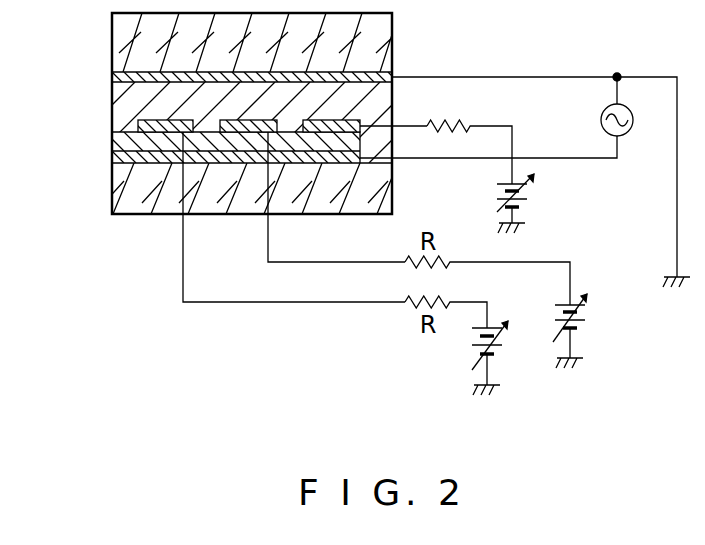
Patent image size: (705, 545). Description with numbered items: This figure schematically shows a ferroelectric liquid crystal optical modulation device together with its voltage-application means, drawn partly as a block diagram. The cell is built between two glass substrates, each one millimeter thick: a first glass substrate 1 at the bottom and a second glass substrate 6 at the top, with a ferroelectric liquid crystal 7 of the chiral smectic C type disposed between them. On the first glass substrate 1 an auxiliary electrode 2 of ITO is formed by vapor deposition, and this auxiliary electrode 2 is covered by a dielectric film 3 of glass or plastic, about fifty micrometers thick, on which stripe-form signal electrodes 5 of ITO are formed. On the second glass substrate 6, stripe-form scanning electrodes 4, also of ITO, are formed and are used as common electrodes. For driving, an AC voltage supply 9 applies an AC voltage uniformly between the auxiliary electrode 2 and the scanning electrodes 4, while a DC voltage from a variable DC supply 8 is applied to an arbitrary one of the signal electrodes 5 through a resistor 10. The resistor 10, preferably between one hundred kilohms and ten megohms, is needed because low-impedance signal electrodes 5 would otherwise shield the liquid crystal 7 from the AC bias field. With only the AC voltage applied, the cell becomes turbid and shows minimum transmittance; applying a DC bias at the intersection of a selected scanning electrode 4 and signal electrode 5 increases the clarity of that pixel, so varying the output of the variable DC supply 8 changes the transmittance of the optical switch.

The first glass substrate 1 is at (113, 197).
The auxiliary electrode 2 is at (112, 158).
The dielectric film 3 is at (115, 142).
The scanning electrodes 4 is at (113, 78).
The signal electrodes 5 is at (112, 128).
The second glass substrate 6 is at (124, 44).
The ferroelectric liquid crystal 7 is at (117, 100).
The variable DC supply 8 is at (495, 195).
The AC voltage supply 9 is at (633, 126).
The resistor 10 is at (447, 122).